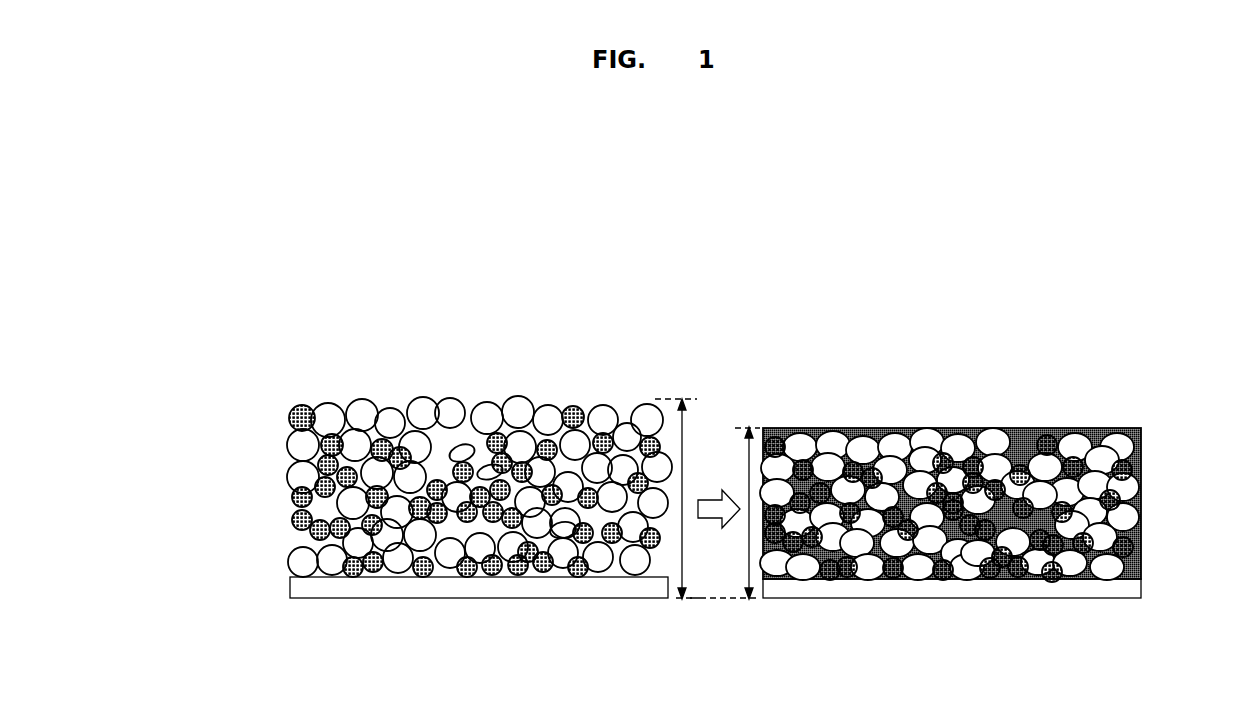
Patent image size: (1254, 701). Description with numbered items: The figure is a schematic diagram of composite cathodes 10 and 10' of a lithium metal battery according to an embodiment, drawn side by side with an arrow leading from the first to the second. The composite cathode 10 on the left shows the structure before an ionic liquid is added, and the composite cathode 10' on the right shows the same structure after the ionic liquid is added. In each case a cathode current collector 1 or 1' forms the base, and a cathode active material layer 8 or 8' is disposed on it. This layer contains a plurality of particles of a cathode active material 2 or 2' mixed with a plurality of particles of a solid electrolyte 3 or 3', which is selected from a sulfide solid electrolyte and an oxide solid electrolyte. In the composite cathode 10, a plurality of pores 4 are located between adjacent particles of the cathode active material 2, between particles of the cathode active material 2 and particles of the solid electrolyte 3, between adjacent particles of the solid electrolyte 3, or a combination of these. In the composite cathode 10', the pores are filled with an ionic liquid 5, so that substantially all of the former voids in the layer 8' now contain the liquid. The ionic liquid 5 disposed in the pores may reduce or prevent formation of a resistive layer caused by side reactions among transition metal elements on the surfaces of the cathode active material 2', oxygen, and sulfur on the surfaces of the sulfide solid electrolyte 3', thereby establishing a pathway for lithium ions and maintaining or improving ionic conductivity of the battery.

The cathode current collector 1 is at (454, 589).
The cathode active material 2 is at (456, 486).
The solid electrolyte 3 is at (450, 488).
The pores 4 is at (462, 447).
The cathode active material layer 8 is at (427, 469).
The composite cathode 10 is at (441, 447).
The cathode current collector 1' is at (979, 586).
The cathode active material 2' is at (978, 504).
The solid electrolyte 3' is at (980, 508).
The ionic liquid 5 is at (1135, 535).
The cathode active material layer 8' is at (1005, 514).
The composite cathode 10' is at (970, 446).